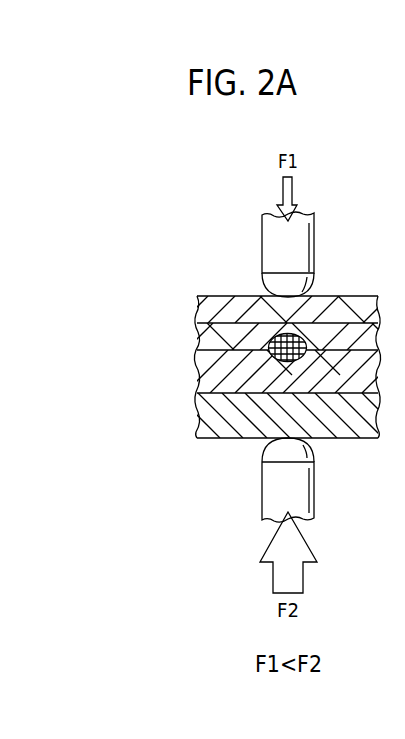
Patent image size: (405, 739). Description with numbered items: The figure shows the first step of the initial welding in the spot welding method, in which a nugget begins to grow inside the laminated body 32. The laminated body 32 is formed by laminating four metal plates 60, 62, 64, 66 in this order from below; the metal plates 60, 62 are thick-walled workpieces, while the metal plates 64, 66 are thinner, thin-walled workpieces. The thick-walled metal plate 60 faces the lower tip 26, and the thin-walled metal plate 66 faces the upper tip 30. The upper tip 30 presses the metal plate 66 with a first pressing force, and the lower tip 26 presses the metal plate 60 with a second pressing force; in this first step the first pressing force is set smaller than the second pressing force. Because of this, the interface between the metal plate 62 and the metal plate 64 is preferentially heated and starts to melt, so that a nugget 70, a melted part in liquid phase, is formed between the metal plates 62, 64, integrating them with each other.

The lower tip 26 is at (270, 478).
The upper tip 30 is at (270, 234).
The laminated body 32 is at (261, 367).
The metal plate 60 is at (279, 415).
The metal plate 62 is at (213, 373).
The metal plate 64 is at (213, 337).
The metal plate 66 is at (213, 313).
The nugget 70 is at (302, 338).